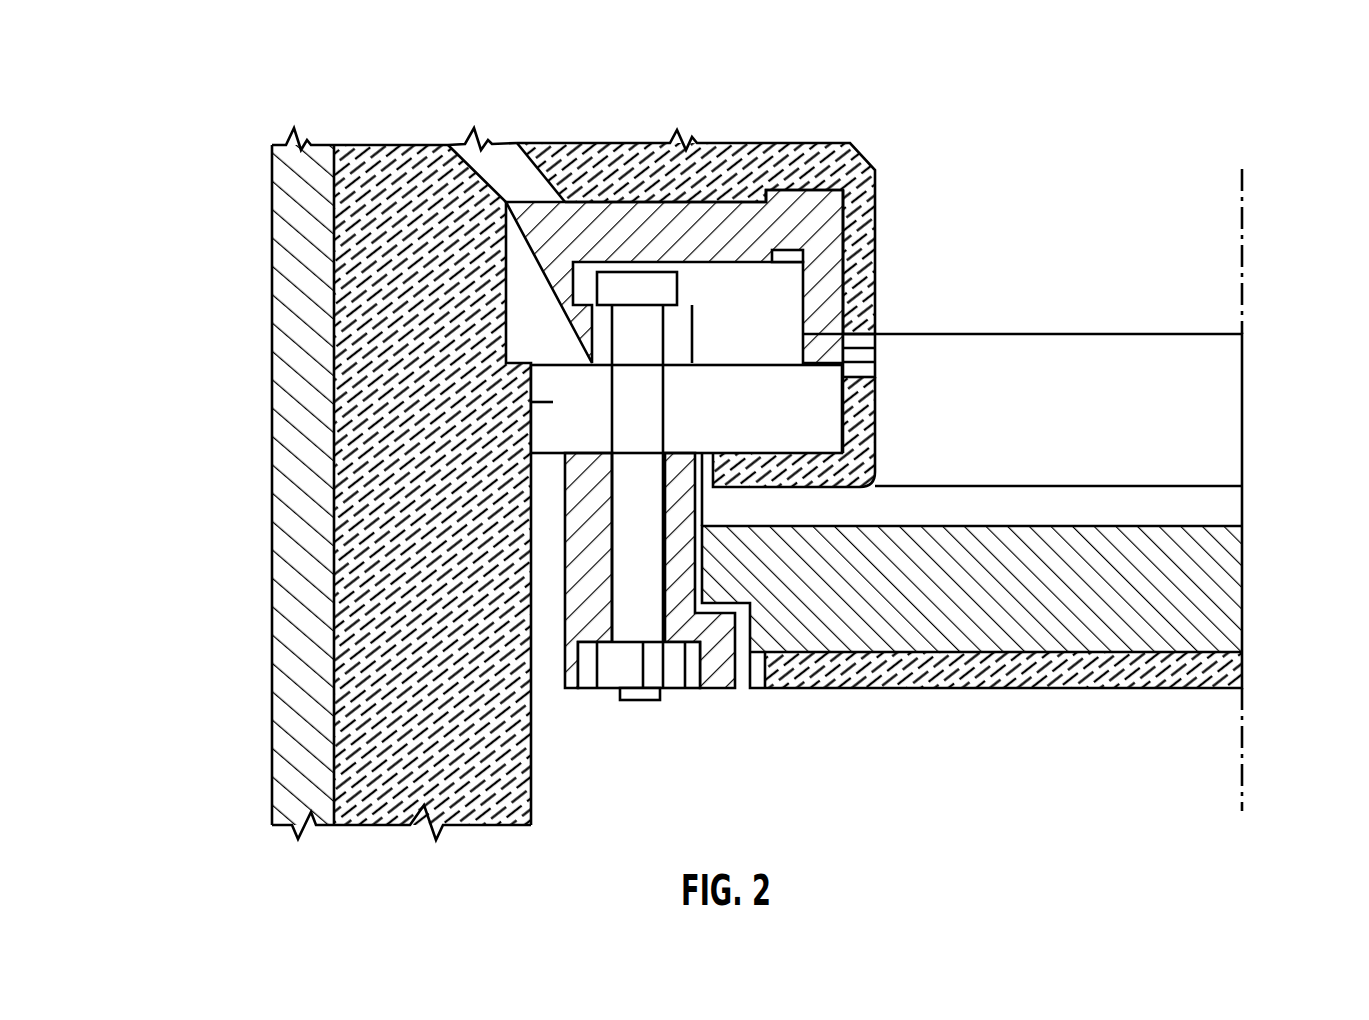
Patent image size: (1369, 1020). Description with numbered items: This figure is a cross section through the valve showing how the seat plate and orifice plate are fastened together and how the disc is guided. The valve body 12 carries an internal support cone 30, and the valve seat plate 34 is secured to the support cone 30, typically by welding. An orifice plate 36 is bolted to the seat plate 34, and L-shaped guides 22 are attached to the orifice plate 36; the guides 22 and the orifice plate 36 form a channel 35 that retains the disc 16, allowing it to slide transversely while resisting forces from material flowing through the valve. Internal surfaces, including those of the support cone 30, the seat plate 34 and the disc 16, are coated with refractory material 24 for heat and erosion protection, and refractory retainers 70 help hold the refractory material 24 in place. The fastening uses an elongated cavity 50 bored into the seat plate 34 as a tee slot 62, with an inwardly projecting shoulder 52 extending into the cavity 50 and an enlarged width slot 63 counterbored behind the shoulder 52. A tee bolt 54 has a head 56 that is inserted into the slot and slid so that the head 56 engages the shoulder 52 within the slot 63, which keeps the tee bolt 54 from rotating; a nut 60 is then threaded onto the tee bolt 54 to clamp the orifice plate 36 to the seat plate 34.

The valve body 12 is at (272, 483).
The disc 16 is at (1243, 609).
The guides 22 is at (565, 665).
The refractory material 24 is at (823, 141).
The internal support cone 30 is at (499, 143).
The valve seat plate 34 is at (587, 202).
The channel 35 is at (698, 481).
The orifice plate 36 is at (800, 389).
The cavity 50 is at (827, 262).
The shoulder 52 is at (692, 318).
The tee bolt 54 is at (613, 423).
The head 56 is at (579, 287).
The nut 60 is at (586, 692).
The tee slot 62 is at (786, 250).
The enlarged width slot 63 is at (612, 270).
The refractory retainers 70 is at (876, 352).